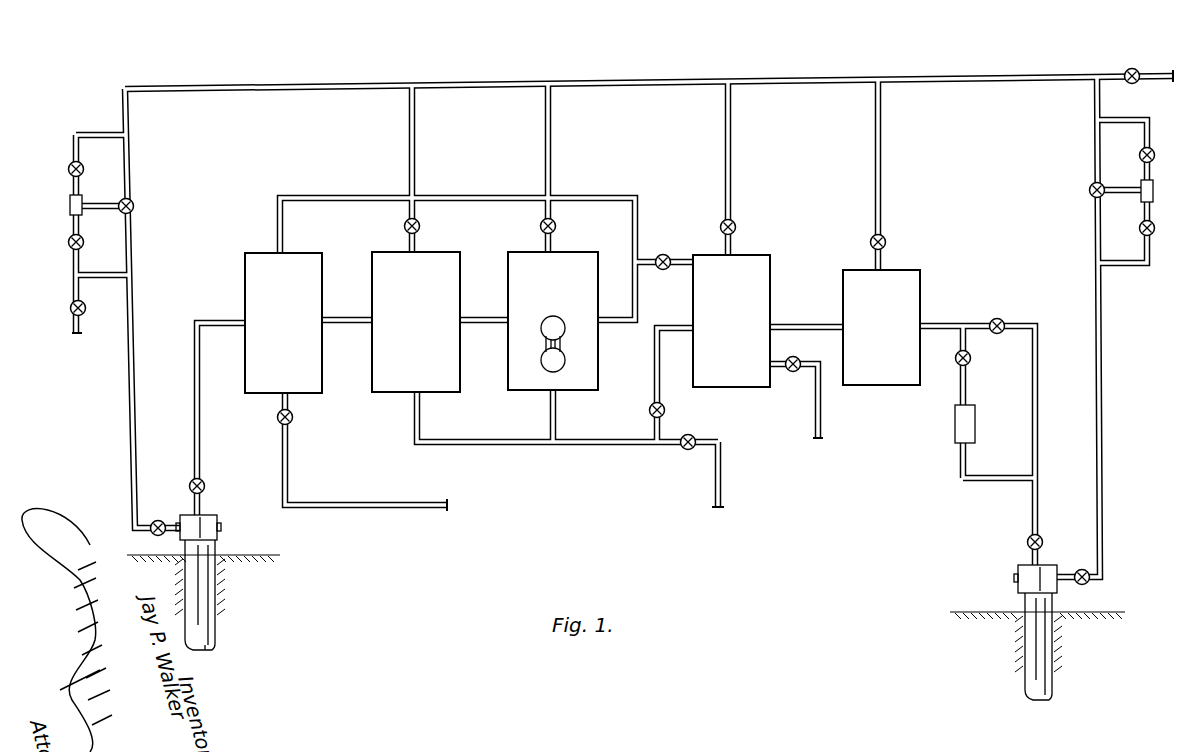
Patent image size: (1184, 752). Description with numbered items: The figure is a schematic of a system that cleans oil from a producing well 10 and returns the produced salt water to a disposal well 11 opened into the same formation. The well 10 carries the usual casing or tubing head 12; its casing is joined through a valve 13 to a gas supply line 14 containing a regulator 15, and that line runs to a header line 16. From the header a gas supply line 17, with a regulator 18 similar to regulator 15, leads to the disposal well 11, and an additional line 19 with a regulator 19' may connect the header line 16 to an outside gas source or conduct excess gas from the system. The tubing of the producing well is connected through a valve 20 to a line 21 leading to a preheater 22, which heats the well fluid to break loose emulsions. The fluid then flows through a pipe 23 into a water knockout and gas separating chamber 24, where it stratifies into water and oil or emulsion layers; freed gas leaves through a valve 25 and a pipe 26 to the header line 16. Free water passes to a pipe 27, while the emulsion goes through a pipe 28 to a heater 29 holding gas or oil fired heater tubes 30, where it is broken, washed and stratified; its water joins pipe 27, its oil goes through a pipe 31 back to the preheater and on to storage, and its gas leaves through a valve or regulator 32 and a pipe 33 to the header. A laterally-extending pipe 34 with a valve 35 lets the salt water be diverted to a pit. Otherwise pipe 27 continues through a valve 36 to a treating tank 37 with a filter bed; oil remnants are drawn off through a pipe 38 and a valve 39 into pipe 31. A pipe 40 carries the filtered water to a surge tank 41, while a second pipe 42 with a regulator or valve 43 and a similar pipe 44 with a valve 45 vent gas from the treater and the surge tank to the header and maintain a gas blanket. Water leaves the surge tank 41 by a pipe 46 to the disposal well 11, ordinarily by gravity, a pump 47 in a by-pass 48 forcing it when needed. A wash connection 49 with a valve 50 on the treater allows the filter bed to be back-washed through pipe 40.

The well 10 is at (215, 597).
The disposal well 11 is at (1032, 648).
The casing or tubing head 12 is at (215, 536).
The valve 13 is at (154, 518).
The gas supply line 14 is at (135, 388).
The regulator 15 is at (134, 206).
The header line 16 is at (308, 86).
The gas supply line 17 is at (1102, 327).
The regulator 18 is at (1088, 191).
The additional line 19 is at (1152, 55).
The regulator 19' is at (1112, 58).
The valve 20 is at (205, 485).
The line 21 is at (202, 429).
The preheater 22 is at (245, 294).
The pipe 23 is at (356, 326).
The water knockout and gas separating chamber 24 is at (376, 293).
The valve 25 is at (405, 227).
The pipe 26 is at (408, 151).
The pipe 27 is at (654, 400).
The pipe 28 is at (494, 326).
The heater 29 is at (598, 353).
The heater tubes 30 is at (555, 321).
The pipe 31 is at (600, 196).
The valve or regulator 32 is at (541, 227).
The pipe 33 is at (546, 137).
The laterally-extending pipe 34 is at (721, 475).
The valve 35 is at (684, 450).
The valve 36 is at (665, 411).
The treating tank 37 is at (740, 377).
The pipe 38 is at (682, 270).
The valve 39 is at (665, 256).
The pipe 40 is at (790, 325).
The surge tank 41 is at (918, 286).
The second pipe 42 is at (726, 146).
The regulator or valve 43 is at (736, 225).
The pipe 44 is at (882, 152).
The valve 45 is at (885, 242).
The pipe 46 is at (1036, 358).
The pump 47 is at (955, 434).
The by-pass 48 is at (961, 483).
The wash connection 49 is at (821, 421).
The valve 50 is at (797, 362).